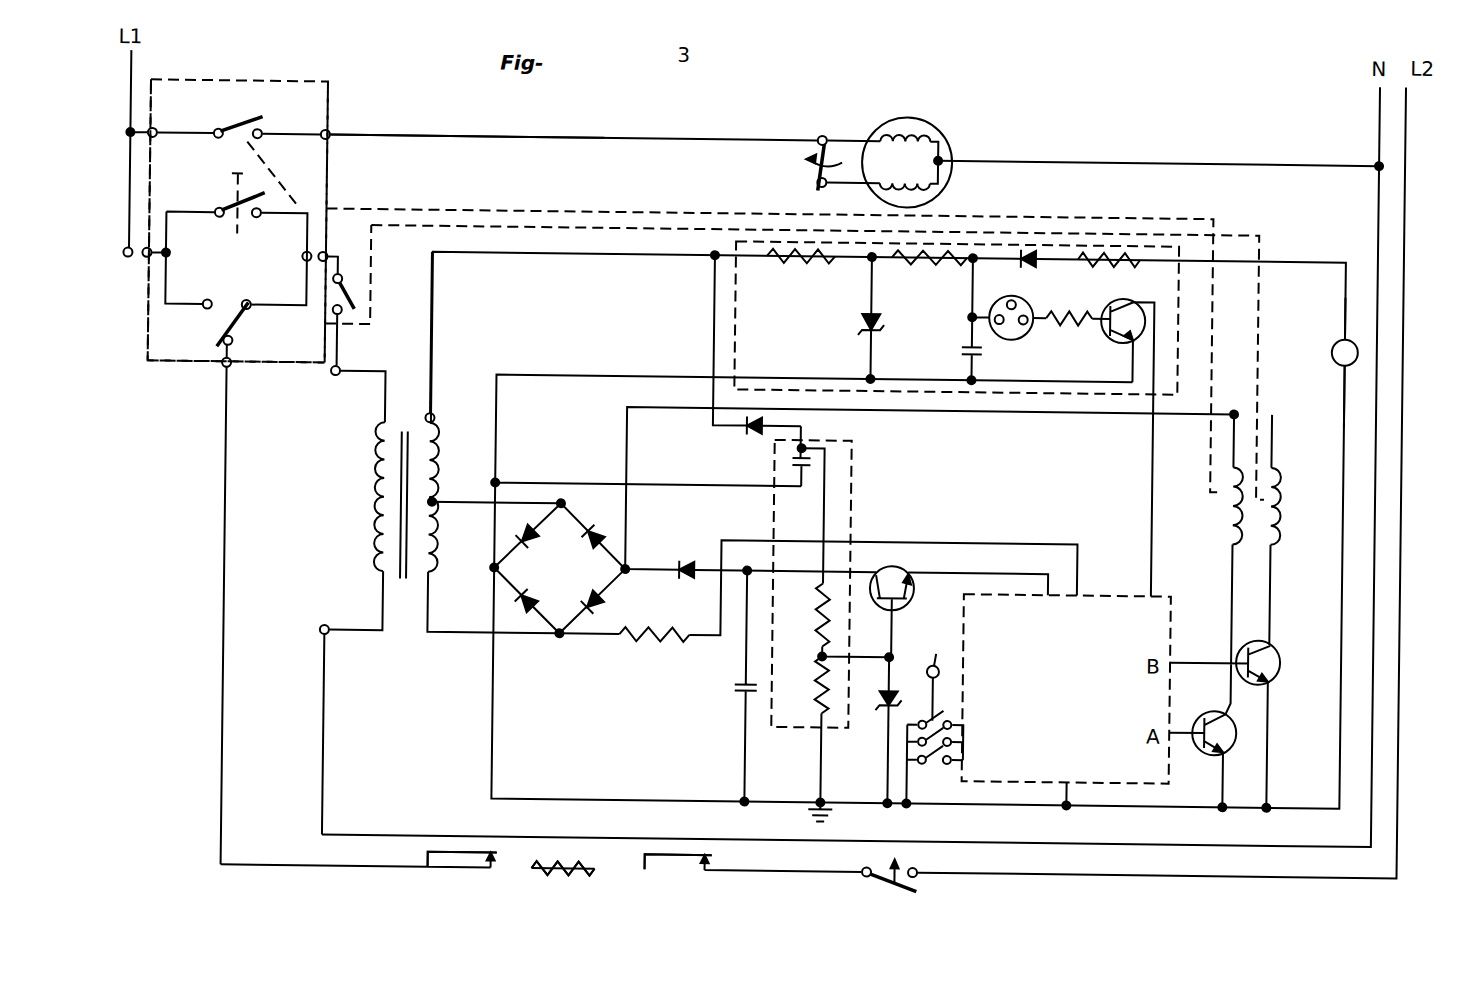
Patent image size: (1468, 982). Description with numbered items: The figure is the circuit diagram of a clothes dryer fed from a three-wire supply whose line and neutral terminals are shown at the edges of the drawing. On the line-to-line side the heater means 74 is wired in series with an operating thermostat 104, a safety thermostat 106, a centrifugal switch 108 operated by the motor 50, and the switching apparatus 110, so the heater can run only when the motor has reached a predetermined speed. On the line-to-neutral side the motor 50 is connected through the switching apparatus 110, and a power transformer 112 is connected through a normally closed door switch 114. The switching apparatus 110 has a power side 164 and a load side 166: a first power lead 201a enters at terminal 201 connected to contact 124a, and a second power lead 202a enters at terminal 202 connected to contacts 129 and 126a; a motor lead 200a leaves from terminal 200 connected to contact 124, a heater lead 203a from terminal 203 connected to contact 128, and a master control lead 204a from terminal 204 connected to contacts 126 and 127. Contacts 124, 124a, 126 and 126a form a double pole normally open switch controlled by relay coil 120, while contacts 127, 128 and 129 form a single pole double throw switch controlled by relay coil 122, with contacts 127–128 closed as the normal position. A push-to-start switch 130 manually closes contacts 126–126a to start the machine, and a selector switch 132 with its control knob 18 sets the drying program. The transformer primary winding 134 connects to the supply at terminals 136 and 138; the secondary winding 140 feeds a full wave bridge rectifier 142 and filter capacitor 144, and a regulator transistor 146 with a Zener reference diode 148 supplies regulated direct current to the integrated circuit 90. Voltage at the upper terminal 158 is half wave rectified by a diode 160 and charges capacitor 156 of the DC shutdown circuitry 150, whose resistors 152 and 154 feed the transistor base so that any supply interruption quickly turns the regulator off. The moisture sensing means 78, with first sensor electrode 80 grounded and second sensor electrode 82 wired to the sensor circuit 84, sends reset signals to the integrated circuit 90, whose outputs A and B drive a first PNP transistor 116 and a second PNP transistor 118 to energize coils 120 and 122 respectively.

The control knob 18 is at (938, 671).
The motor 50 is at (932, 122).
The heater means 74 is at (570, 876).
The moisture sensing means 78 is at (1330, 347).
The first sensor electrode 80 is at (1338, 366).
The second sensor electrode 82 is at (1338, 335).
The sensor circuit 84 is at (1140, 240).
The integrated circuit 90 is at (1070, 695).
The operating thermostat 104 is at (468, 858).
The safety thermostat 106 is at (686, 858).
The centrifugal switch 108 is at (905, 888).
The switching apparatus 110 is at (289, 76).
The power transformer 112 is at (393, 645).
The door switch 114 is at (348, 298).
The first PNP transistor 116 is at (1207, 760).
The second PNP transistor 118 is at (1278, 645).
The relay coil 120 is at (1224, 510).
The relay coil 122 is at (1282, 496).
The contact 124 is at (256, 135).
The contact 124a is at (212, 134).
The contact 126 is at (254, 224).
The contact 126a is at (216, 224).
The contact 127 is at (246, 305).
The contact 128 is at (231, 348).
The contact 129 is at (205, 305).
The push-to-start switch 130 is at (234, 176).
The selector switch 132 is at (946, 775).
The primary winding 134 is at (372, 483).
The terminal 136 is at (332, 381).
The terminal 138 is at (323, 630).
The secondary winding 140 is at (438, 443).
The full wave bridge rectifier 142 is at (580, 586).
The filter capacitor 144 is at (735, 692).
The regulator transistor 146 is at (914, 572).
The Zener reference diode 148 is at (886, 710).
The DC shutdown circuitry 150 is at (852, 466).
The resistor 152 is at (818, 598).
The resistor 154 is at (818, 682).
The capacitor 156 is at (792, 470).
The upper terminal 158 is at (433, 416).
The diode 160 is at (748, 430).
The power side 164 is at (146, 198).
The load side 166 is at (326, 165).
The terminal 200 is at (324, 135).
The motor lead 200a is at (458, 137).
The terminal 201 is at (150, 134).
The first power lead 201a is at (122, 137).
The terminal 202 is at (142, 264).
The second power lead 202a is at (122, 264).
The terminal 203 is at (221, 372).
The heater lead 203a is at (221, 452).
The terminal 204 is at (312, 258).
The master control lead 204a is at (340, 262).